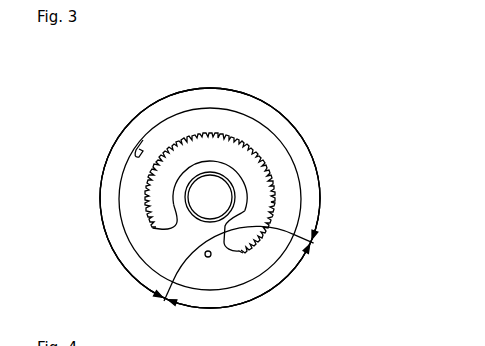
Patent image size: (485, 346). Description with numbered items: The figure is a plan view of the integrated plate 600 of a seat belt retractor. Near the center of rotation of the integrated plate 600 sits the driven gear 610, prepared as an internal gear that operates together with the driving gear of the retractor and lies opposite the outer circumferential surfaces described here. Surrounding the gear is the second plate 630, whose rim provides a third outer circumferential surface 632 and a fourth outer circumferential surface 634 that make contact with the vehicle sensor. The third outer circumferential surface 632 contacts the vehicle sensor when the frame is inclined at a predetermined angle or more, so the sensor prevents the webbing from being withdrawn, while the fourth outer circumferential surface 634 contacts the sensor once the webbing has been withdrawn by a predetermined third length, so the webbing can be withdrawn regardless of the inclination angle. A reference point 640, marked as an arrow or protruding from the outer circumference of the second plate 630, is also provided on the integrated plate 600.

The integrated plate 600 is at (70, 89).
The driven gear 610 is at (231, 138).
The second plate 630 is at (280, 170).
The third outer circumferential surface 632 is at (210, 188).
The fourth outer circumferential surface 634 is at (236, 274).
The reference point 640 is at (143, 140).